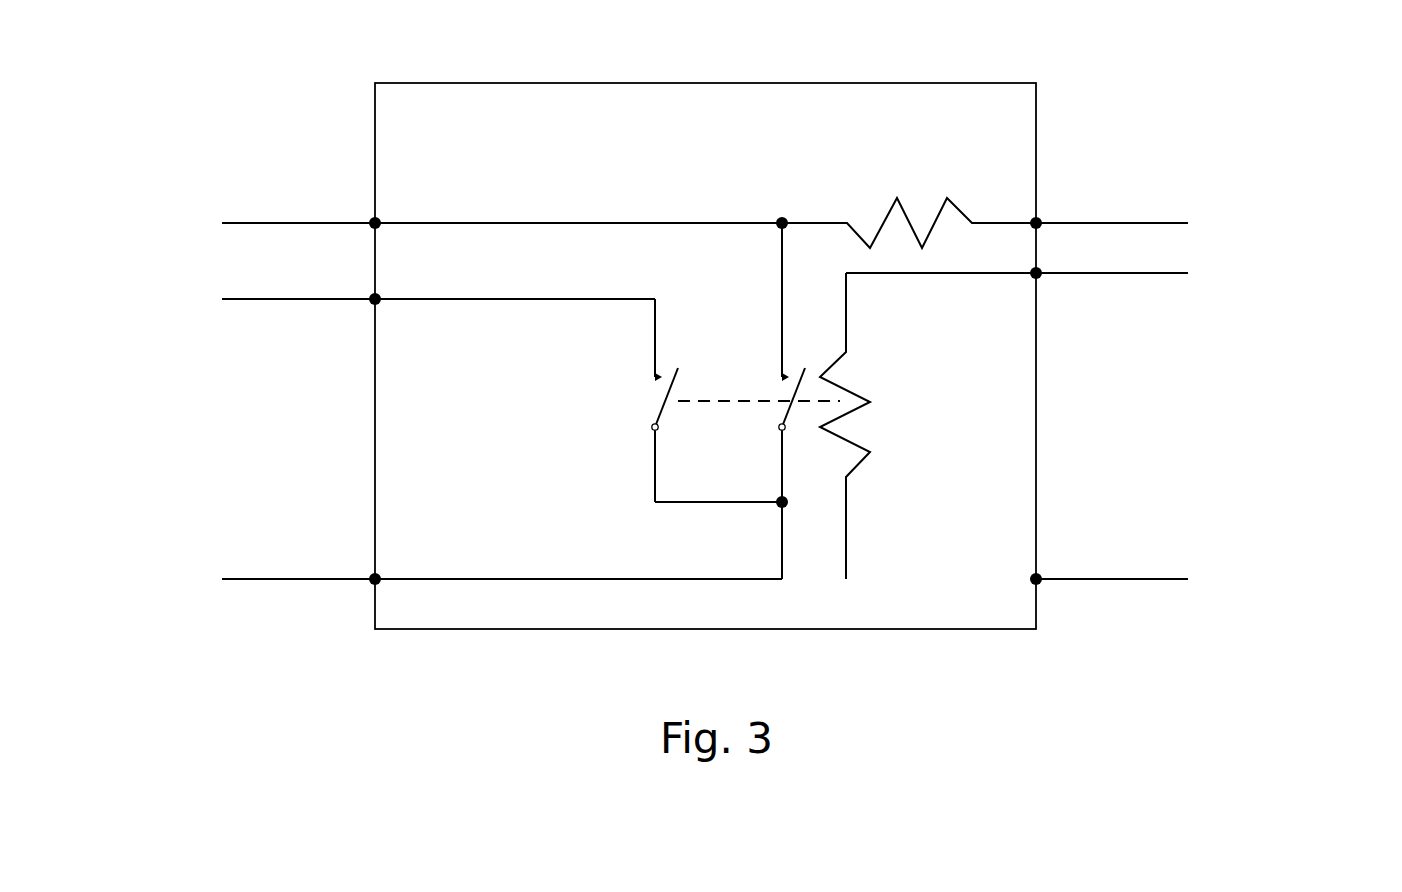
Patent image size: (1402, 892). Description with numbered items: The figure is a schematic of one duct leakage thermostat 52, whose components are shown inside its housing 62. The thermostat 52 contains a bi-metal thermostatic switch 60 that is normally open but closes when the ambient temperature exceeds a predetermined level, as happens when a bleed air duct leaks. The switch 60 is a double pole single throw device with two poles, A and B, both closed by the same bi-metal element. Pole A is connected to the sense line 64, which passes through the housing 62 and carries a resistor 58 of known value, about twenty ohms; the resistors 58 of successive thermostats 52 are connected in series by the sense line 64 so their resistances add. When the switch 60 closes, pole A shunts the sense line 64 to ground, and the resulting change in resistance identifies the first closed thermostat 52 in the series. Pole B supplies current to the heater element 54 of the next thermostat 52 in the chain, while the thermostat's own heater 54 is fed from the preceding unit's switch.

The thermostat 52 is at (701, 315).
The housing 62 is at (987, 83).
The resistor 58 is at (967, 215).
The heater element 54 is at (857, 446).
The bi-metal thermostatic switch 60 is at (634, 411).
The sense line 64 is at (428, 223).